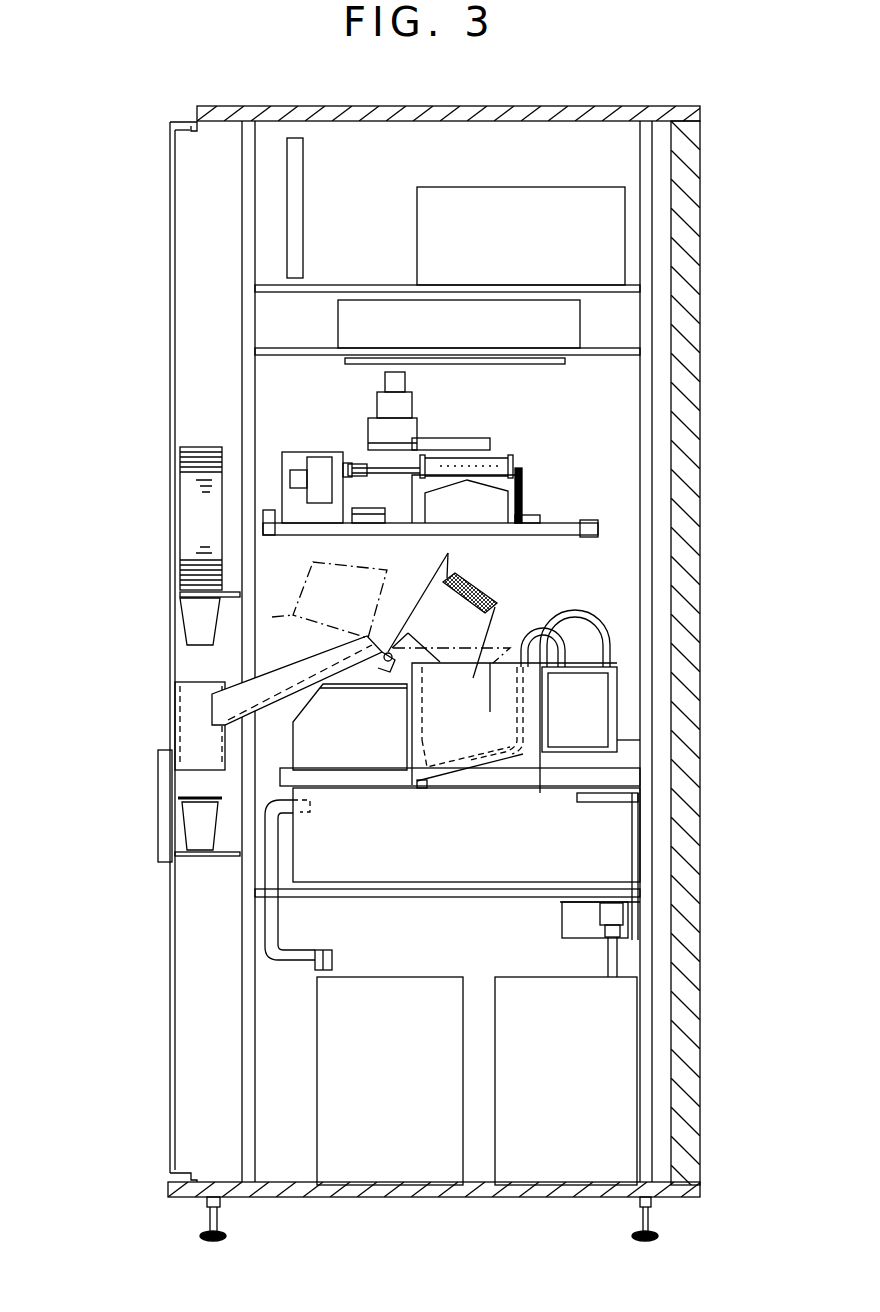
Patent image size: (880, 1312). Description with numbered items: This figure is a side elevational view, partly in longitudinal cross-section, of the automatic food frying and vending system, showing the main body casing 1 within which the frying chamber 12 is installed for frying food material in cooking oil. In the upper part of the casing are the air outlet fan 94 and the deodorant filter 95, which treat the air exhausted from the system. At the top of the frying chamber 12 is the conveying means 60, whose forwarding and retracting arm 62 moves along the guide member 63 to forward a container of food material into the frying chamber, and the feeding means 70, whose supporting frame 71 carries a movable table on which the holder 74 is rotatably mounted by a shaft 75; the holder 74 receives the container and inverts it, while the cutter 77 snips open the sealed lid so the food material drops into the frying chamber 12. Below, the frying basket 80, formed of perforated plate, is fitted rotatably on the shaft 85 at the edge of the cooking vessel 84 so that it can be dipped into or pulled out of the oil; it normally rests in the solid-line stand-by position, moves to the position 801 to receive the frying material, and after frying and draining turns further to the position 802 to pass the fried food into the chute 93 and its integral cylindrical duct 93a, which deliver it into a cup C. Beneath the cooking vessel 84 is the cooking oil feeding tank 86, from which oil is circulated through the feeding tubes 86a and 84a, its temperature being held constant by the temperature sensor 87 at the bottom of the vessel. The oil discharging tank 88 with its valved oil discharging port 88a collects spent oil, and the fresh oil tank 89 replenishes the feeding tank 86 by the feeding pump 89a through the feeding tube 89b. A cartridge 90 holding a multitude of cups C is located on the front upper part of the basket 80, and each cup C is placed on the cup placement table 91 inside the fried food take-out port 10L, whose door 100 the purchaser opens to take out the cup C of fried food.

The main body casing 1 is at (620, 108).
The fried food take-out port 10L is at (158, 778).
The frying chamber 12 is at (625, 638).
The conveying means 60 is at (358, 421).
The forwarding and retracting arm 62 is at (437, 440).
The guide member 63 is at (495, 452).
The feeding means 70 is at (508, 464).
The supporting frame 71 is at (598, 540).
The holder 74 is at (514, 456).
The shaft 75 is at (370, 463).
The cutter 77 is at (515, 497).
The frying basket 80 is at (478, 593).
The basket receiving position 801 is at (493, 770).
The basket discharging position 802 is at (350, 620).
The cooking vessel 84 is at (450, 770).
The feeding tube 84a is at (423, 787).
The shaft 85 is at (385, 668).
The cooking oil feeding tank 86 is at (620, 822).
The feeding tube 86a is at (593, 622).
The temperature sensor 87 is at (548, 627).
The oil discharging tank 88 is at (620, 1073).
The oil discharging port 88a is at (613, 965).
The fresh oil tank 89 is at (407, 998).
The feeding pump 89a is at (328, 950).
The feeding tube 89b is at (283, 962).
The cartridge 90 is at (182, 530).
The cup placement table 91 is at (230, 857).
The chute 93 is at (290, 670).
The cylindrical duct 93a is at (187, 712).
The air outlet fan 94 is at (612, 223).
The deodorant filter 95 is at (572, 327).
The door 100 is at (157, 852).
The cup C is at (193, 617).